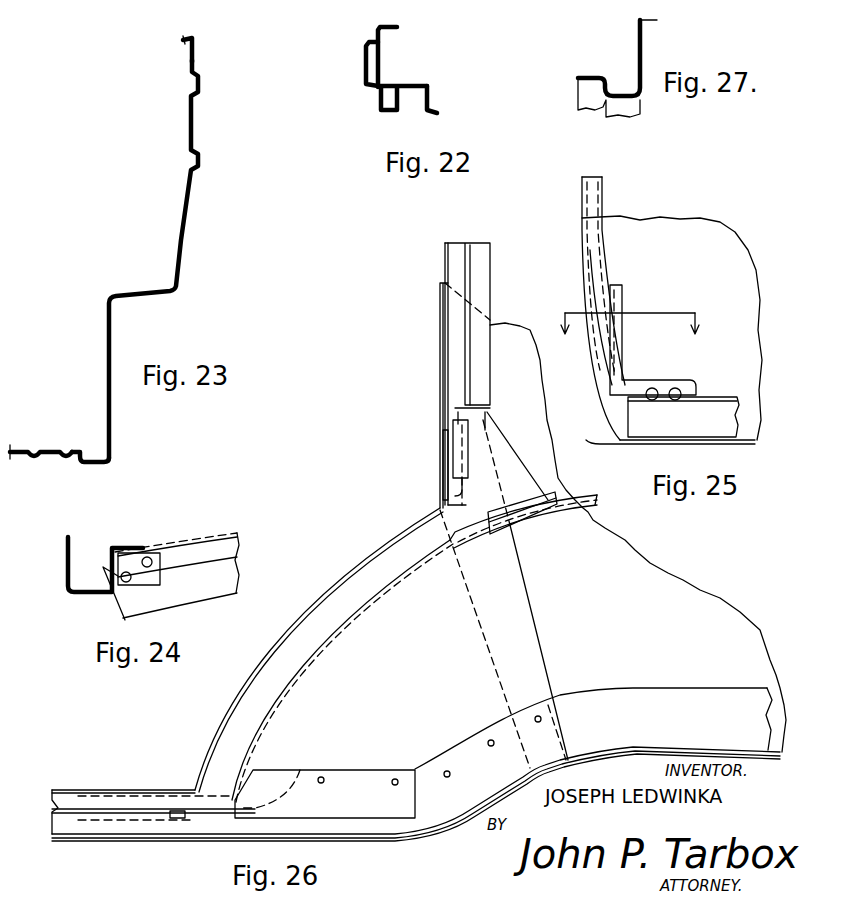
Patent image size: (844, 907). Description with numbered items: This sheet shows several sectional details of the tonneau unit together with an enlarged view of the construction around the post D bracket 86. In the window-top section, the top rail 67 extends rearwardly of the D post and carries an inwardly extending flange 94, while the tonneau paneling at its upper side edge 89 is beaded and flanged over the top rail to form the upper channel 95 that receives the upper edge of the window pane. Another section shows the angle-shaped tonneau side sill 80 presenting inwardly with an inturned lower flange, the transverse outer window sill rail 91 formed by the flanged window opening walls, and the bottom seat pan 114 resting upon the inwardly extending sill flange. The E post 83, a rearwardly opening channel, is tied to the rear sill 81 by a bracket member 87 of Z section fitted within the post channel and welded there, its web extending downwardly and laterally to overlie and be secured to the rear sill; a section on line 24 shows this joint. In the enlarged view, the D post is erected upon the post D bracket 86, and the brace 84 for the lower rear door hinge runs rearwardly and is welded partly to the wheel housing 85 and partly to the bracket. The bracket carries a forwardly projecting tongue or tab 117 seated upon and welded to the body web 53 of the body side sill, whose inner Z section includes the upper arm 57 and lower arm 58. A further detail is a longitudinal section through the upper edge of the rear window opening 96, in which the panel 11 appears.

In FIG. 27, the side wall panel 11 is at (646, 58).
In FIG. 25, the section line 24- 24 is at (633, 337).
In FIG. 26, the body web 53 is at (93, 821).
In FIG. 26, the upper arm 57 is at (273, 782).
In FIG. 26, the lower arm 58 is at (54, 812).
In FIG. 22, the top rail 67 is at (379, 66).
In FIG. 23, the tonneau side sill 80 is at (105, 449).
In FIG. 26, the tonneau side sill 80 is at (470, 760).
In FIG. 25, the rear sill 81 is at (660, 423).
In FIG. 24, the rear sill 81 is at (221, 569).
In FIG. 25, the E post 83 is at (605, 197).
In FIG. 24, the E post 83 is at (66, 565).
In FIG. 26, the brace 84 is at (498, 473).
In FIG. 23, the wheel housing 85 is at (107, 332).
In FIG. 26, the wheel housing 85 is at (630, 565).
In FIG. 26, the post D bracket 86 is at (396, 648).
In FIG. 25, the bracket member 87 is at (618, 309).
In FIG. 24, the bracket member 87 is at (138, 565).
In FIG. 22, the upper side edge of tonneau paneling 89 is at (365, 65).
In FIG. 23, the outer window sill rail 91 is at (190, 38).
In FIG. 22, the inwardly extending flange 94 is at (437, 113).
In FIG. 22, the upper channel 95 is at (410, 96).
In FIG. 27, the rear window opening 96 is at (643, 107).
In FIG. 23, the bottom seat pan 114 is at (45, 451).
In FIG. 26, the tongue or tab 117 is at (180, 811).